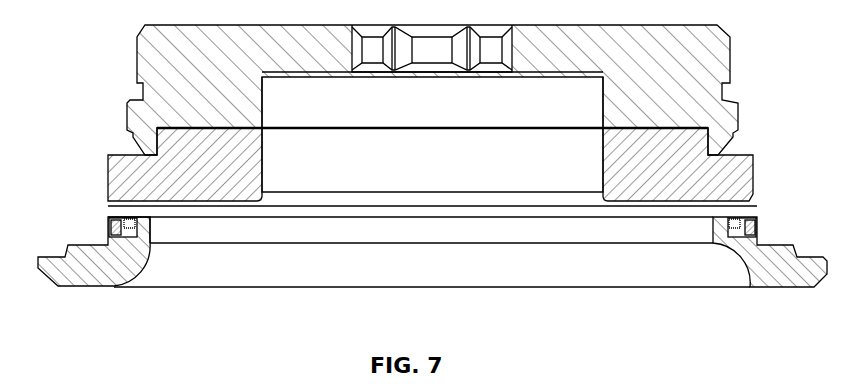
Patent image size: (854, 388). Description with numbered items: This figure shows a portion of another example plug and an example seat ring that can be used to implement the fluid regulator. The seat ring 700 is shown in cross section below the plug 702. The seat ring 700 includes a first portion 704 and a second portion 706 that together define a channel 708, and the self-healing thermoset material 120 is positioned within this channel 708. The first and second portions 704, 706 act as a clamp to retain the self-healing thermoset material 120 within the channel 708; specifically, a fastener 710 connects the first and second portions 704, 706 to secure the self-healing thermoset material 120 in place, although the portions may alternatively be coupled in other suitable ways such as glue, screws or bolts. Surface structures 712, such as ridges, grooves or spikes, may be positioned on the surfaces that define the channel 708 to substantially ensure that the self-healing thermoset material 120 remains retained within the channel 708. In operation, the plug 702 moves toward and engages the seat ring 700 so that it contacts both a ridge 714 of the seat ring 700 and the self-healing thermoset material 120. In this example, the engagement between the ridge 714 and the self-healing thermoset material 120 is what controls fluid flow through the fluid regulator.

The plug 702 is at (145, 50).
The ridge 714 is at (130, 201).
The self-healing thermoset material 120 is at (100, 205).
The second portion 706 is at (128, 222).
The fastener 710 is at (113, 223).
The seat ring 700 is at (58, 283).
The surface structures 712 is at (118, 226).
The channel 708 is at (138, 257).
The first portion 704 is at (790, 278).